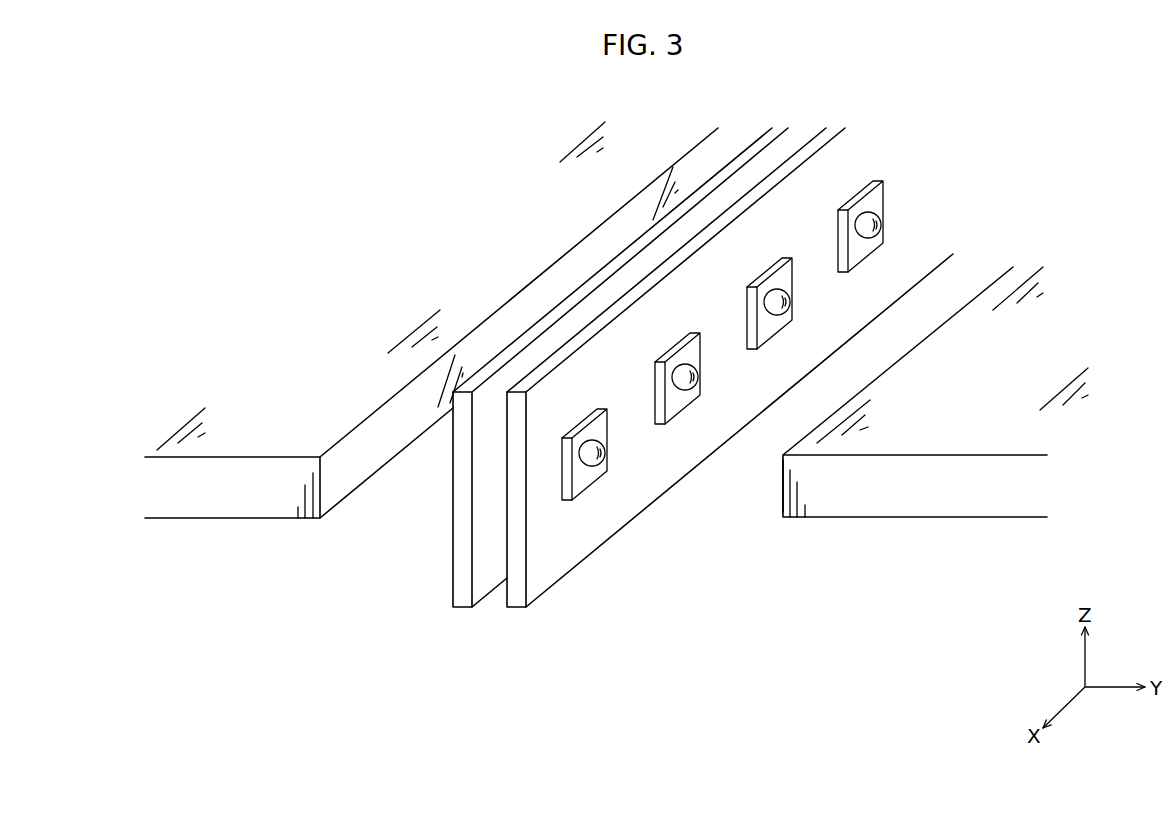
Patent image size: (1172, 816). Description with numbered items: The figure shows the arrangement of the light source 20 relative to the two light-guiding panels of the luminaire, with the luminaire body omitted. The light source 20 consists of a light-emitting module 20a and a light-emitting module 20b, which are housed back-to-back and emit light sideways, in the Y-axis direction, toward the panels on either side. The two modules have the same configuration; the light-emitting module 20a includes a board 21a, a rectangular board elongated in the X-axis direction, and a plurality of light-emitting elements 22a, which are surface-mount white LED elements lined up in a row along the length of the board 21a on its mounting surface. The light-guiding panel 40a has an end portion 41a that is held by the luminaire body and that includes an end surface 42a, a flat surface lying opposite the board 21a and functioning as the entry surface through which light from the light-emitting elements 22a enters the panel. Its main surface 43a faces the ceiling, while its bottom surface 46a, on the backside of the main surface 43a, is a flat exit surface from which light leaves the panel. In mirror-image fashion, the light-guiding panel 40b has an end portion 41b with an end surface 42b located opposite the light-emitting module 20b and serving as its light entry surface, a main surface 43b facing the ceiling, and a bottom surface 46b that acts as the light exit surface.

The light source 20 is at (703, 440).
The light-emitting module 20a is at (730, 421).
The light-emitting module 20b is at (462, 590).
The board 21a is at (540, 583).
The light-emitting elements 22a is at (593, 470).
The light-guiding panel 40a is at (893, 400).
The light-guiding panel 40b is at (431, 357).
The end portion 41a is at (973, 317).
The end portion 41b is at (510, 270).
The end surface 42a is at (780, 485).
The end surface 42b is at (383, 437).
The main surface 43a is at (997, 390).
The main surface 43b is at (305, 352).
The bottom surface 46a is at (843, 519).
The bottom surface 46b is at (287, 522).